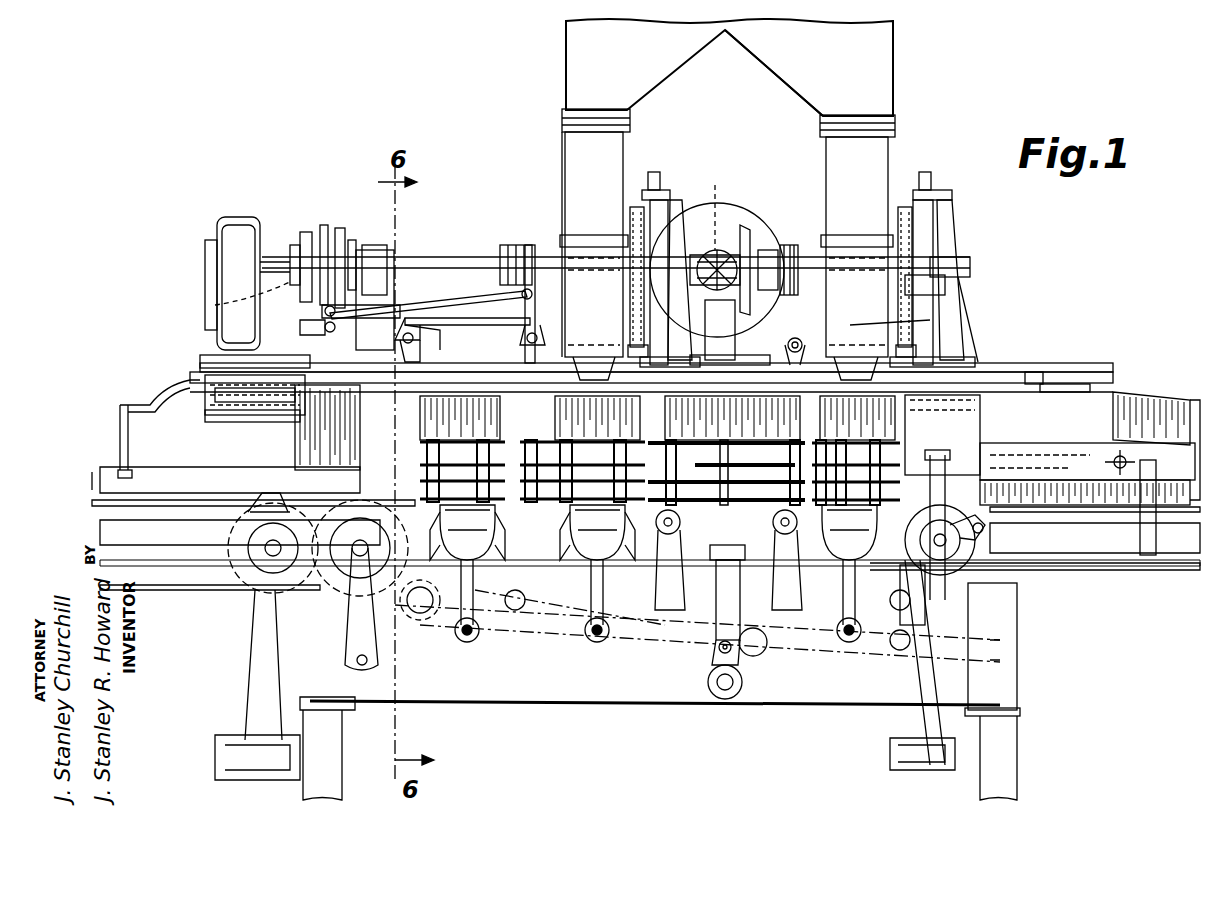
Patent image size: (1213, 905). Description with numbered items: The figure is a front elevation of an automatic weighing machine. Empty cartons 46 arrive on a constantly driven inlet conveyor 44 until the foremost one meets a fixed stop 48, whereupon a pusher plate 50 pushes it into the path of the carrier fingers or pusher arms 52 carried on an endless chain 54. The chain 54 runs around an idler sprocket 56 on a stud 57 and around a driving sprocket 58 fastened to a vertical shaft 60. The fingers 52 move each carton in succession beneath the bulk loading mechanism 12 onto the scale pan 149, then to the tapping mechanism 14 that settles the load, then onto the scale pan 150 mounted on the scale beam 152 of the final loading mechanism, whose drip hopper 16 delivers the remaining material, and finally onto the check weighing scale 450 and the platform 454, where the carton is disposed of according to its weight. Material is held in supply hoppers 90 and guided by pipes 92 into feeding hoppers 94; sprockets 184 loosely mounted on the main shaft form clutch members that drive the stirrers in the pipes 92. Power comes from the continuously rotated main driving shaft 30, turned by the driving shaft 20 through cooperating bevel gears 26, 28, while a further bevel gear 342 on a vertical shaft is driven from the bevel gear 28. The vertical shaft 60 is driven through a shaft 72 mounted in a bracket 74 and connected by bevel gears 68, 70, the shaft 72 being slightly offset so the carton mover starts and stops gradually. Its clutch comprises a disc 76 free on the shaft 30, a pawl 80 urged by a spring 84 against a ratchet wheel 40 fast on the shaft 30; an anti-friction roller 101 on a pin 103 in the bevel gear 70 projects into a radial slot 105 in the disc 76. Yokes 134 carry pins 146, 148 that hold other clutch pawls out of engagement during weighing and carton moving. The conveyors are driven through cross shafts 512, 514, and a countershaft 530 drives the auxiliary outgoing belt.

The bulk loading mechanism 12 is at (908, 165).
The tapping mechanism 14 is at (714, 652).
The drip hopper 16 is at (560, 197).
The driving shaft 20 is at (715, 197).
The bevel gear 26 is at (722, 207).
The bevel gear 28 is at (752, 230).
The main driving shaft 30 is at (454, 257).
The ratchet wheel 40 is at (352, 240).
The inlet conveyor 44 is at (1074, 507).
The cartons 46 is at (1164, 402).
The fixed stop 48 is at (917, 467).
The pusher plate 50 is at (967, 547).
The pusher arm 52 is at (120, 412).
The chain 54 is at (227, 388).
The idler sprocket 56 is at (1064, 384).
The stud 57 is at (1038, 372).
The driving sprocket 58 is at (277, 420).
The vertical shaft 60 is at (297, 447).
The bevel gear 68 is at (258, 225).
The bevel gear 70 is at (296, 245).
The shaft 72 is at (287, 262).
The bracket 74 is at (306, 232).
The disc 76 is at (340, 228).
The pawl 80 is at (372, 250).
The spring 84 is at (362, 250).
The supply hoppers 90 is at (566, 70).
The pipes 92 is at (562, 152).
The feeding hoppers 94 is at (560, 325).
The anti-friction roller 101 is at (324, 225).
The pin 103 is at (215, 305).
The radial slot 105 is at (330, 327).
The yokes 134 is at (630, 227).
The pin 146 is at (647, 217).
The pin 148 is at (930, 320).
The scale pan 149 is at (800, 592).
The scale pan 150 is at (507, 572).
The scale beam 152 is at (637, 547).
The sprockets 184 is at (508, 245).
The bevel gear 342 is at (790, 345).
The check weighing scale 450 is at (502, 632).
The platform 454 is at (253, 494).
The cross shaft 512 is at (1007, 570).
The cross shaft 514 is at (262, 614).
The countershaft 530 is at (268, 550).